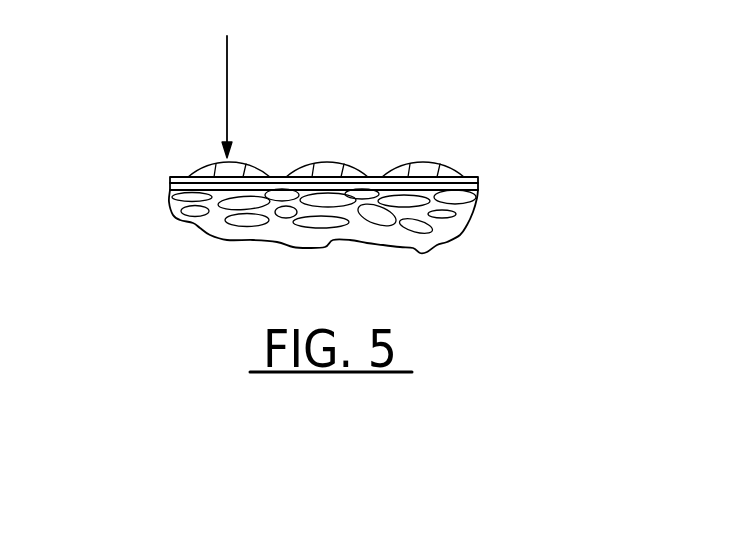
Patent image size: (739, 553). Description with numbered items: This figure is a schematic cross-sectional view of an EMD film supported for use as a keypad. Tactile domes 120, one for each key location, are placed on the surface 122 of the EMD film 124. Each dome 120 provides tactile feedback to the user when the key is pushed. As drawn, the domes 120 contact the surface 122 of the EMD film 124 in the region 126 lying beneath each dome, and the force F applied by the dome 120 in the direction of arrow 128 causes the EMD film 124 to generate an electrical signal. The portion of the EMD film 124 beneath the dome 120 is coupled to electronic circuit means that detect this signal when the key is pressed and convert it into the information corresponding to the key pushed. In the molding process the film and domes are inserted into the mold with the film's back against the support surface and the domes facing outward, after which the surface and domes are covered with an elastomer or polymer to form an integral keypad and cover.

The tactile dome 120 is at (432, 162).
The surface 122 is at (476, 175).
The EMD film 124 is at (348, 151).
The region 126 is at (220, 179).
The arrow 128 is at (224, 68).